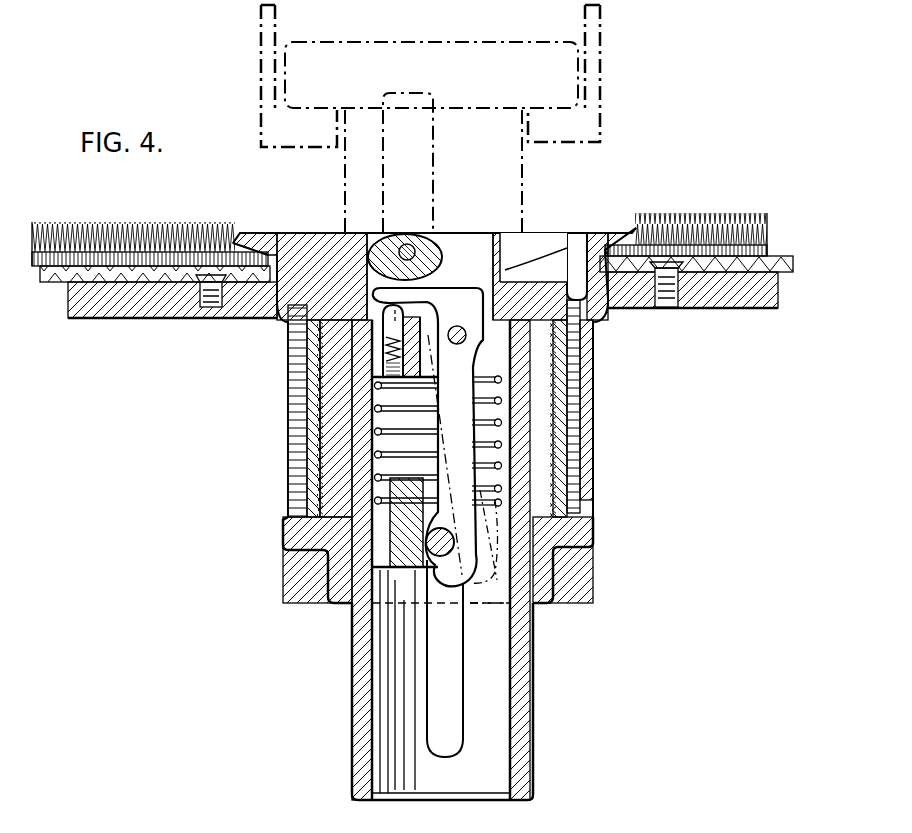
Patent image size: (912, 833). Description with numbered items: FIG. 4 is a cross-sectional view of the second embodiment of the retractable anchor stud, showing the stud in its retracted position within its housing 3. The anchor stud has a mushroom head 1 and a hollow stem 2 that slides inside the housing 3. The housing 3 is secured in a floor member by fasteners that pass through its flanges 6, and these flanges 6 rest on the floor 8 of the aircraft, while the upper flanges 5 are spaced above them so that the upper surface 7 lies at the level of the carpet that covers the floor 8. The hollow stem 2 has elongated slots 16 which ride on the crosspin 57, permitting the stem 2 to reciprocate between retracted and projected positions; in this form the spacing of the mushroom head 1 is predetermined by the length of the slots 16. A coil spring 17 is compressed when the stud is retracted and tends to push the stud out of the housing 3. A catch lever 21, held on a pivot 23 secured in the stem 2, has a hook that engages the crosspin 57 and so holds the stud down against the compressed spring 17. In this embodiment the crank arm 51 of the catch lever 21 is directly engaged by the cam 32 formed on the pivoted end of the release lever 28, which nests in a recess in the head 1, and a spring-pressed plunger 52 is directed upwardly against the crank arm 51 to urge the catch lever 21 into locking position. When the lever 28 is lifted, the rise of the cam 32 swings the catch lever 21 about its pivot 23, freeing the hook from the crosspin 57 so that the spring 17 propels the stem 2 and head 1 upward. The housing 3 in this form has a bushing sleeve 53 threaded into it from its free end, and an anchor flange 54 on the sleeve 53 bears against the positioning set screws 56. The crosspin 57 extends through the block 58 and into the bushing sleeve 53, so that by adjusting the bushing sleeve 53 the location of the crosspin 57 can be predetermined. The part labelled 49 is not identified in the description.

The head 1 is at (523, 47).
The hollow stem 2 is at (530, 630).
The housing 3 is at (436, 399).
The upper flanges 5 is at (637, 223).
The flanges 6 is at (703, 300).
The upper surface 7 is at (603, 223).
The floor 8 is at (766, 310).
The elongated slots 16 is at (452, 658).
The coil spring 17 is at (500, 392).
The catch lever 21 is at (513, 403).
The pivot 23 is at (457, 326).
The lever 28 is at (540, 231).
The cam 32 is at (440, 231).
The cap 49 is at (595, 122).
The crank arm 51 is at (437, 293).
The spring-pressed plunger 52 is at (385, 325).
The bushing sleeve 53 is at (550, 480).
The anchor flange 54 is at (585, 532).
The positioning set screws 56 is at (577, 447).
The crosspin 57 is at (437, 543).
The block 58 is at (380, 543).